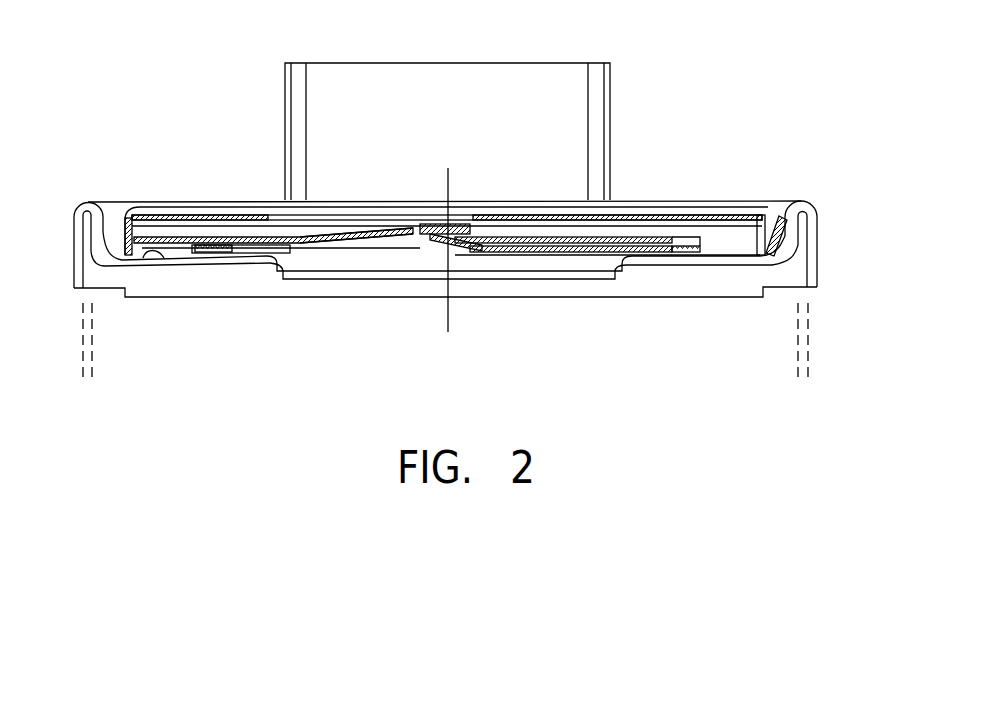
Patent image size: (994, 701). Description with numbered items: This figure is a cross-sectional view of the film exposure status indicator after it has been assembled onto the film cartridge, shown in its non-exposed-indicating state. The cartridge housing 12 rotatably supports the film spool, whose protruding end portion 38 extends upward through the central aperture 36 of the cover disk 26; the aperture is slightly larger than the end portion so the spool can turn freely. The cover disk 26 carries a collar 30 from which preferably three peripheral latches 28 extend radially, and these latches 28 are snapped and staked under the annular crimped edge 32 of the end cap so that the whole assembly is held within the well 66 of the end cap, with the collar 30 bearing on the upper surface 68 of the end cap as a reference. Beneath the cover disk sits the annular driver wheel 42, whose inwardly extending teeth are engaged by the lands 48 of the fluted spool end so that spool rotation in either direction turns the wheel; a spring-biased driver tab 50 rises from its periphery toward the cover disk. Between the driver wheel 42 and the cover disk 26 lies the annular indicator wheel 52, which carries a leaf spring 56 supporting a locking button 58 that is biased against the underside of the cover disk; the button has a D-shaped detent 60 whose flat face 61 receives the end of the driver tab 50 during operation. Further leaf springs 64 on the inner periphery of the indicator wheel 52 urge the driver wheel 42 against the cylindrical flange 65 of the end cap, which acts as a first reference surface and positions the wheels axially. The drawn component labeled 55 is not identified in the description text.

The cartridge housing 12 is at (818, 372).
The cover disk 26 is at (740, 220).
The peripheral latches 28 is at (790, 212).
The collar 30 is at (131, 224).
The annular crimped edge 32 is at (817, 236).
The central aperture 36 is at (595, 220).
The protruding end portion 38 is at (503, 63).
The annular driver wheel 42 is at (325, 254).
The lands 48 is at (611, 76).
The spring-biased driver tab 50 is at (440, 240).
The annular indicator wheel 52 is at (703, 247).
The tab 55 is at (379, 233).
The leaf spring 56 is at (580, 255).
The locking button 58 is at (457, 222).
The detent 60 is at (457, 240).
The flat face 61 is at (434, 222).
The leaf springs 64 is at (205, 216).
The cylindrical flange 65 is at (277, 270).
The well 66 is at (98, 204).
The upper surface 68 is at (164, 258).